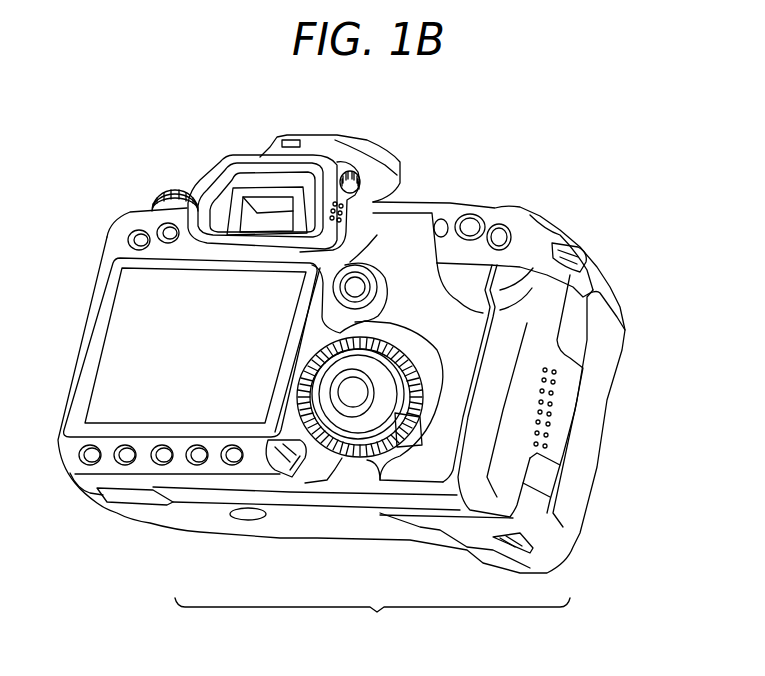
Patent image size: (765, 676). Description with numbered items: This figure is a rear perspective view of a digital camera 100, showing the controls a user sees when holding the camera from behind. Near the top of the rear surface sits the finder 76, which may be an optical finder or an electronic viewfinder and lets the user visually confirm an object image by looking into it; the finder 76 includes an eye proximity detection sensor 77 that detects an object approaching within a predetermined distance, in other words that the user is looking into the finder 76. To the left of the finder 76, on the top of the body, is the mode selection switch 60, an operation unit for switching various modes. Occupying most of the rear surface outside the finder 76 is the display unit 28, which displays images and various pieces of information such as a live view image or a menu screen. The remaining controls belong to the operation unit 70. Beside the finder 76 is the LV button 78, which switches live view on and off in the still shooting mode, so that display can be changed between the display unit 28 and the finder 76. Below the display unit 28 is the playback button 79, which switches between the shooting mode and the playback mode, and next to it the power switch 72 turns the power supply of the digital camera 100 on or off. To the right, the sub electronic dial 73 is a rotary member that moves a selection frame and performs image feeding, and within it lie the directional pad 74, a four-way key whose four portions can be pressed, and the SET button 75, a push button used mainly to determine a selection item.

The digital camera 100 is at (622, 196).
The mode selection switch 60 is at (163, 190).
The eye proximity detection sensor 77 is at (303, 187).
The finder 76 is at (273, 197).
The LV button 78 is at (357, 263).
The display unit 28 is at (133, 328).
The playback button 79 is at (232, 465).
The power switch 72 is at (290, 477).
The sub electronic dial 73 is at (327, 454).
The directional pad 74 is at (343, 418).
The SET button 75 is at (352, 388).
The operation unit 70 is at (372, 621).